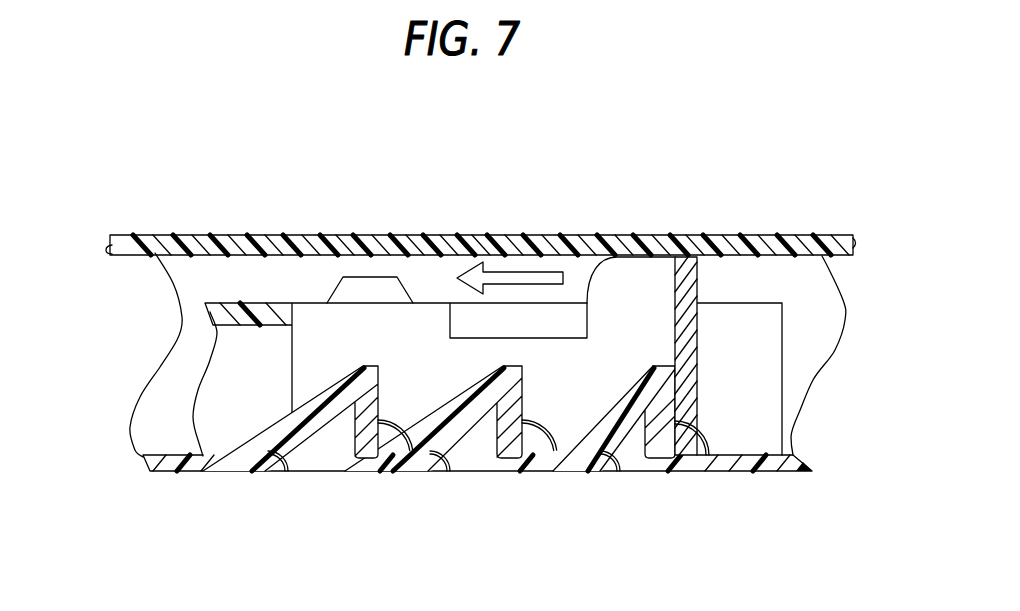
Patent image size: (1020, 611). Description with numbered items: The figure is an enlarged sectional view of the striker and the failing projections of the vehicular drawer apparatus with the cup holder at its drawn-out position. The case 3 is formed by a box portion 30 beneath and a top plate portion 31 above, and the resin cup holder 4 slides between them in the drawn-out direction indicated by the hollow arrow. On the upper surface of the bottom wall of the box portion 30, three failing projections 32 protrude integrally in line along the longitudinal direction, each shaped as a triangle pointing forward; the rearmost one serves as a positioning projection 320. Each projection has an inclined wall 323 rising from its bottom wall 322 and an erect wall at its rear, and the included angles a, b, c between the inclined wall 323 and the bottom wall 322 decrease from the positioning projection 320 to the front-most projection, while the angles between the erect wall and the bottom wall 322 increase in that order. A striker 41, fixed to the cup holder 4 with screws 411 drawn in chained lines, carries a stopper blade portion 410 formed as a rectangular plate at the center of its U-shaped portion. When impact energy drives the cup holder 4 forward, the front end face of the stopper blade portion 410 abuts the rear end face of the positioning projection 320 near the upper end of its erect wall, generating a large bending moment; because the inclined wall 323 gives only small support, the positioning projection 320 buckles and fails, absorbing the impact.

The case 3 is at (222, 195).
The cup holder 4 is at (482, 312).
The box portion 30 is at (722, 467).
The top plate portion 31 is at (757, 242).
The failing projections 32 is at (497, 371).
The positioning projection 320 is at (617, 418).
The bottom wall 322 is at (674, 463).
The inclined wall 323 is at (603, 418).
The striker 41 is at (577, 277).
The stopper blade portion 410 is at (687, 285).
The screws 411 is at (370, 282).
The included angle a is at (613, 460).
The included angle b is at (443, 457).
The included angle c is at (280, 462).